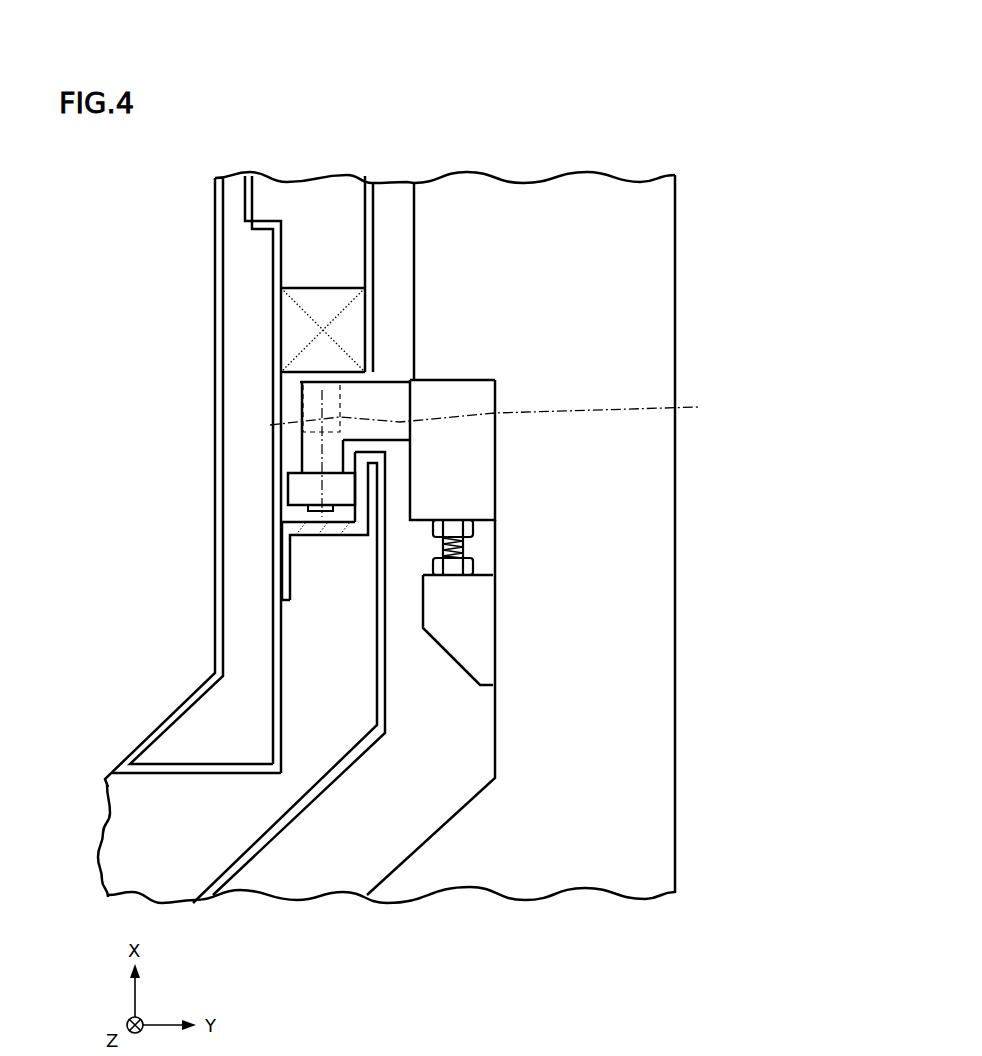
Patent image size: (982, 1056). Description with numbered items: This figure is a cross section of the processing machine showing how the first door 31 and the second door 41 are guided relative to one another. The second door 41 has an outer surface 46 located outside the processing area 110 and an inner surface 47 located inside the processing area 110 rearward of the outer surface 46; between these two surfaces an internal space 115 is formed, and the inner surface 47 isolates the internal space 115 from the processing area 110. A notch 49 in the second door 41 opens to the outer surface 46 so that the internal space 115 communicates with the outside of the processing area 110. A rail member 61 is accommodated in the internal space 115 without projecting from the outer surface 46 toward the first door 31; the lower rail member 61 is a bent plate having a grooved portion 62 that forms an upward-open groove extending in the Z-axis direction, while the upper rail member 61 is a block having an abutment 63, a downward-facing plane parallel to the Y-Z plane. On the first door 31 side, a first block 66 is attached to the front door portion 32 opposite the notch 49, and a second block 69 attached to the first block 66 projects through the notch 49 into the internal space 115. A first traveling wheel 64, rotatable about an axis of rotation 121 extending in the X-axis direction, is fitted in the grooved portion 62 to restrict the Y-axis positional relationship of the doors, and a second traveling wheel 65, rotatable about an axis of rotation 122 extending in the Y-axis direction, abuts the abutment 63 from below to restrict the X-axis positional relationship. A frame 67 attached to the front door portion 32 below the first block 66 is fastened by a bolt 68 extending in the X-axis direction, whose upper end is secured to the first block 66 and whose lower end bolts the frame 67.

The first door 31 is at (677, 219).
The front door portion 32 is at (648, 690).
The second door 41 is at (375, 202).
The outer surface 46 is at (375, 245).
The inner surface 47 is at (213, 300).
The notch 49 is at (370, 388).
The rail member 61 is at (280, 334).
The grooved portion 62 is at (353, 483).
The abutment 63 is at (300, 386).
The first traveling wheel 64 is at (303, 503).
The second traveling wheel 65 is at (270, 425).
The first block 66 is at (470, 480).
The frame 67 is at (468, 618).
The bolt 68 is at (463, 547).
The second block 69 is at (357, 390).
The processing area 110 is at (239, 539).
The internal space 115 is at (318, 198).
The axis of rotation 121 is at (308, 506).
The axis of rotation 122 is at (503, 412).